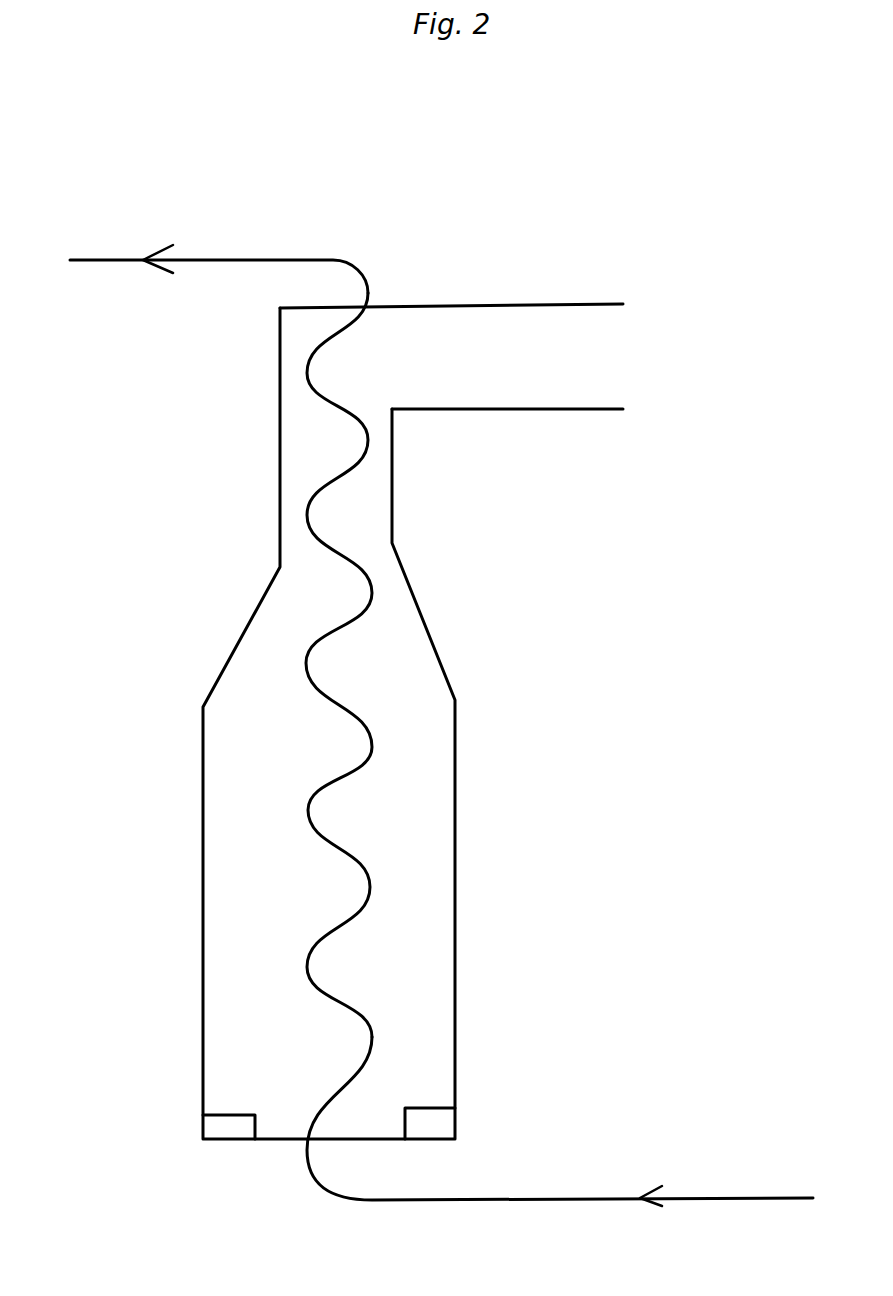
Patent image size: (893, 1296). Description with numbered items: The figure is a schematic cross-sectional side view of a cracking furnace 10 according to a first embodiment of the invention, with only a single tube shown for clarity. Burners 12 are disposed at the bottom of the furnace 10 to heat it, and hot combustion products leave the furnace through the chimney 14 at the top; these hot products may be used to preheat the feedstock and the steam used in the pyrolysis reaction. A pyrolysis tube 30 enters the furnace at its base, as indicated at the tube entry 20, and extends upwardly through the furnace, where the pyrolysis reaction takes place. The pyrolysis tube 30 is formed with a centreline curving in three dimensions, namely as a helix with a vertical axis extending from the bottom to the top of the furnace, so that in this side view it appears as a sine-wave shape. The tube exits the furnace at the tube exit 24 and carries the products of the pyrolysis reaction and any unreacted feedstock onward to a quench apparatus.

The cracking furnace 10 is at (195, 862).
The burners 12 is at (233, 1130).
The chimney 14 is at (560, 358).
The pyrolysis tube entry 20 is at (712, 1174).
The pyrolysis tube exit 24 is at (168, 212).
The pyrolysis tube 30 is at (388, 754).